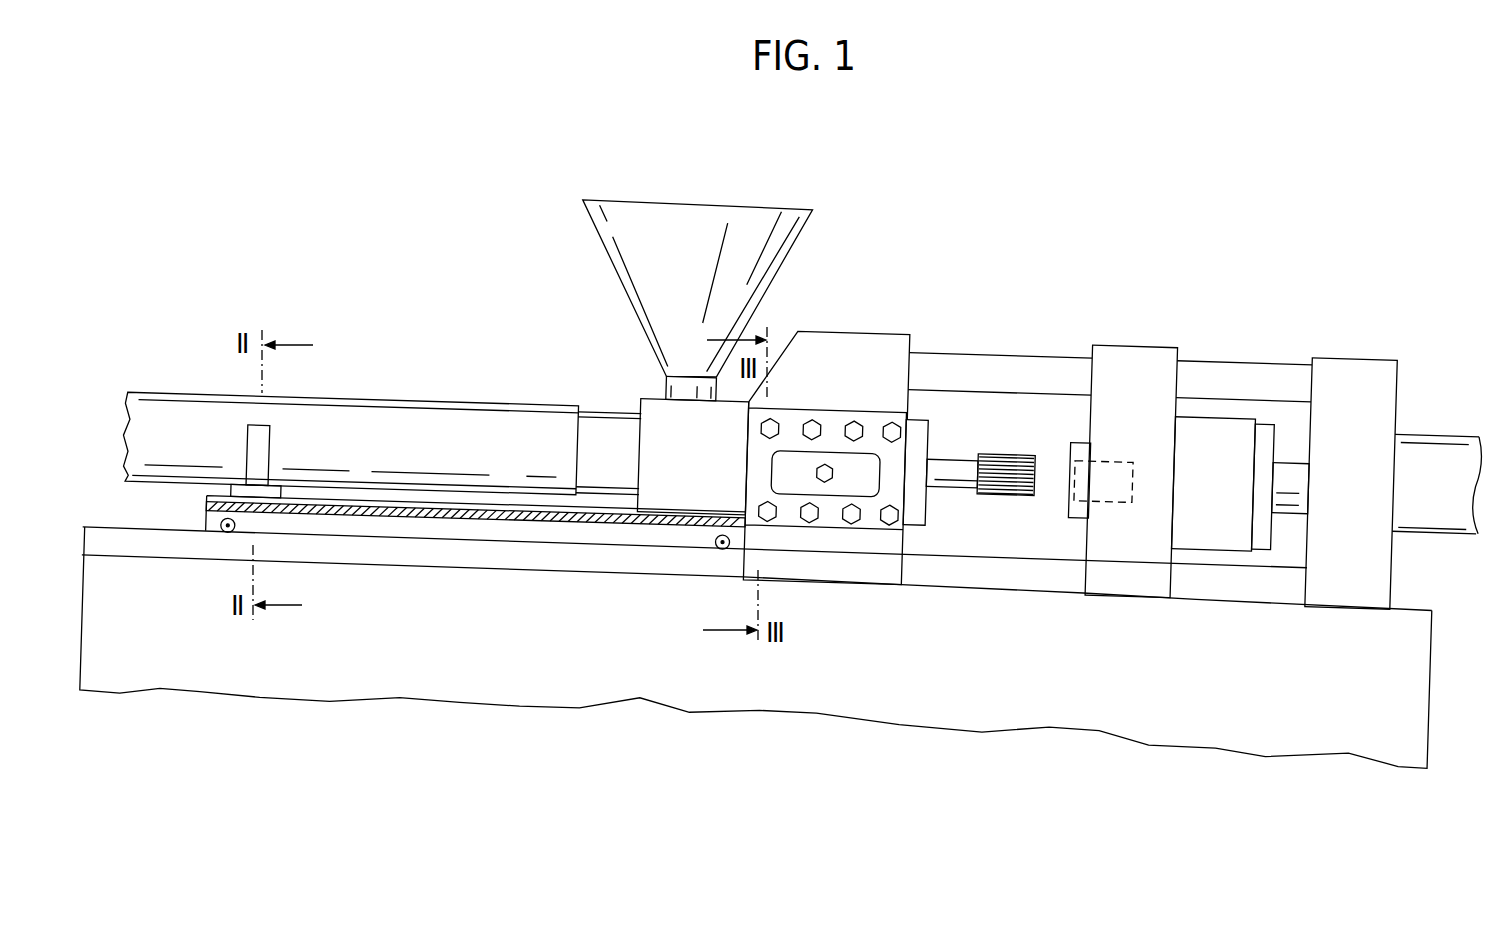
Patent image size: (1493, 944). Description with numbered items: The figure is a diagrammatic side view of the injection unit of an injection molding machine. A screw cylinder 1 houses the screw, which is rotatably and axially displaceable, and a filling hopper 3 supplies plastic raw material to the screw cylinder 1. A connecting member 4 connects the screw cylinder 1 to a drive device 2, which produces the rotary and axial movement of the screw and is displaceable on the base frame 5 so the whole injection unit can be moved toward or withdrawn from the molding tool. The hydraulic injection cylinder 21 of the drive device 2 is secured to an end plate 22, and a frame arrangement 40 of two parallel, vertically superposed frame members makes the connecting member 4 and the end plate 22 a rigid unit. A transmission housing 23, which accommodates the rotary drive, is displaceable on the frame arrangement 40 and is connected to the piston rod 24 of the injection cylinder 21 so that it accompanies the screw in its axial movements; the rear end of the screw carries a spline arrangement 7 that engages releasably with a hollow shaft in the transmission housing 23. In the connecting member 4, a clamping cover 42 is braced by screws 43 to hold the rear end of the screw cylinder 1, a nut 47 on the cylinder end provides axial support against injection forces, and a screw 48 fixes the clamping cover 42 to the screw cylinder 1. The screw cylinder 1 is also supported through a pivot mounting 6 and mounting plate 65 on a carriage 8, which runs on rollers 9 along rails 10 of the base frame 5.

The screw cylinder 1 is at (397, 410).
The drive device 2 is at (1010, 344).
The filling hopper 3 is at (763, 253).
The connecting member 4 is at (883, 340).
The base frame 5 is at (997, 698).
The pivot mounting 6 is at (283, 497).
The spline arrangement 7 is at (1020, 482).
The carriage 8 is at (535, 527).
The rollers 9 is at (208, 524).
The rails 10 is at (397, 548).
The hydraulic injection cylinder 21 is at (1432, 485).
The end plate 22 is at (1357, 380).
The transmission housing 23 is at (1153, 363).
The piston rod 24 is at (1293, 492).
The frame arrangement 40 is at (1258, 377).
The clamping cover 42 is at (893, 455).
The screws 43 is at (855, 522).
The nut 47 is at (913, 512).
The screw 48 is at (822, 472).
The mounting plate 65 is at (438, 512).